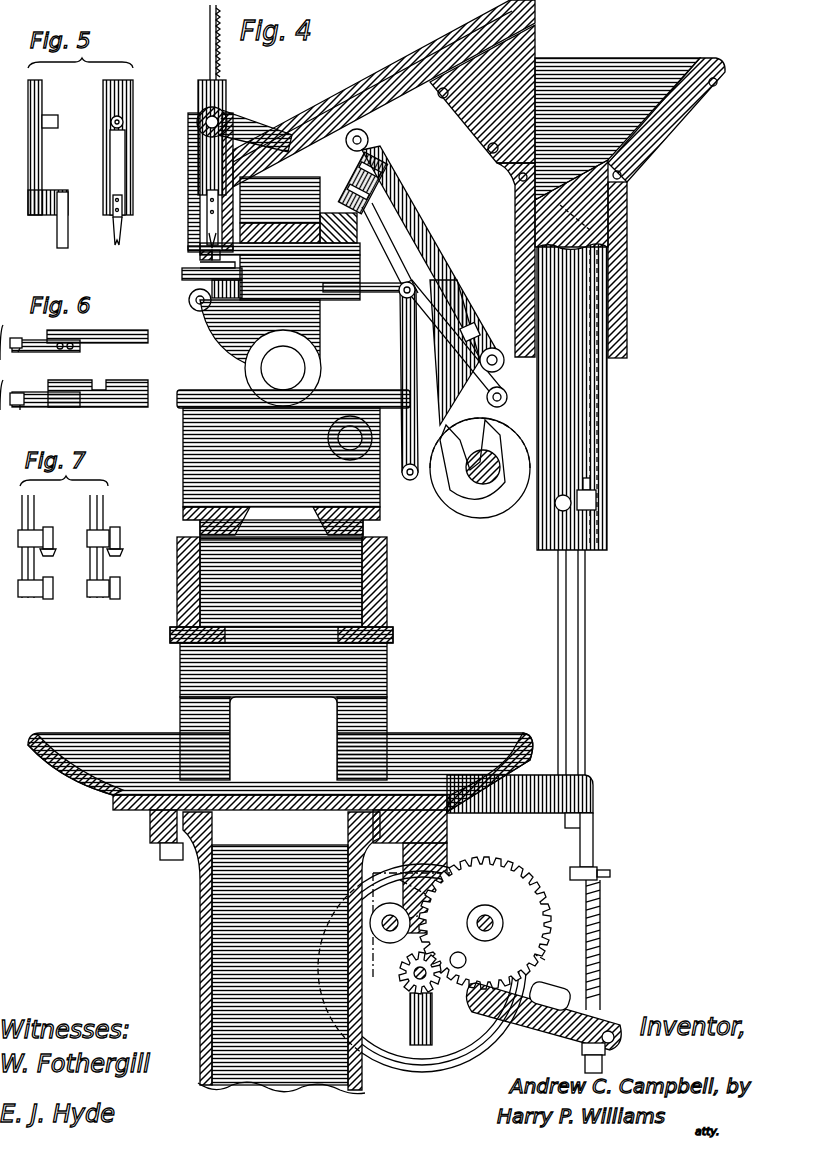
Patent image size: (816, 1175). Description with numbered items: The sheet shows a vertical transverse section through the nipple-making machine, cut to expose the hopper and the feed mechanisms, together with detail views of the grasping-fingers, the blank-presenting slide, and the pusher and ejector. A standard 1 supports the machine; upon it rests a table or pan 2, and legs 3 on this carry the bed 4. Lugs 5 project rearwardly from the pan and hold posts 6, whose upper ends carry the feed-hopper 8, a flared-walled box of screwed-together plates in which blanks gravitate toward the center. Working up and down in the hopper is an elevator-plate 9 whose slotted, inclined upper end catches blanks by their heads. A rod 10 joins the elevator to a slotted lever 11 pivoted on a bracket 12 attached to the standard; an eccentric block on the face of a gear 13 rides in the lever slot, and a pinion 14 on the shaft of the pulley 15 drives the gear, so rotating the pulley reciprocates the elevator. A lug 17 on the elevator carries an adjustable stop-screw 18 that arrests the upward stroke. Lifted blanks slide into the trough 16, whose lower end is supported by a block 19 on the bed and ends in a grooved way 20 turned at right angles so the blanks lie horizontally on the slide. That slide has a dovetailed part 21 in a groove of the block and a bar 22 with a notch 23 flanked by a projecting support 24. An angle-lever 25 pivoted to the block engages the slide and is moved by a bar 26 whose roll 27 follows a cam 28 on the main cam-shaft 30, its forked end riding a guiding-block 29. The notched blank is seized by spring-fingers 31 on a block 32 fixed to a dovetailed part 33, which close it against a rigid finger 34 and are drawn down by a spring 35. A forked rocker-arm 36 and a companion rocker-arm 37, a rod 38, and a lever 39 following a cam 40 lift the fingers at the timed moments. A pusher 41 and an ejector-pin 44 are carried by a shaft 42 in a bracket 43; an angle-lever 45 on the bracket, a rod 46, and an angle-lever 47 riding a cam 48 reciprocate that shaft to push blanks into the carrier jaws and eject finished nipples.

In FIG. 4, the standard 1 is at (198, 928).
In FIG. 4, the table or pan 2 is at (85, 797).
In FIG. 4, the legs 3 is at (330, 716).
In FIG. 4, the bed 4 is at (383, 595).
In FIG. 4, the lugs 5 is at (595, 795).
In FIG. 4, the posts 6 is at (558, 660).
In FIG. 4, the feed-hopper 8 is at (640, 75).
In FIG. 4, the elevator-plate 9 is at (575, 381).
In FIG. 4, the rod 10 is at (587, 733).
In FIG. 4, the lever 11 is at (600, 1010).
In FIG. 4, the bracket 12 is at (392, 1010).
In FIG. 4, the gear 13 is at (548, 880).
In FIG. 4, the pinion 14 is at (445, 988).
In FIG. 4, the pulley 15 is at (515, 1037).
In FIG. 4, the trough 16 is at (451, 60).
In FIG. 4, the lug 17 is at (598, 500).
In FIG. 4, the stop-screw 18 is at (590, 484).
In FIG. 4, the block 19 is at (365, 246).
In FIG. 4, the grooved way 20 is at (205, 182).
In FIG. 4, the dovetailed part 21 is at (337, 256).
In FIG. 6, the dovetailed part 21 is at (128, 343).
In FIG. 4, the bar 22 is at (205, 252).
In FIG. 6, the bar 22 is at (75, 352).
In FIG. 4, the notch 23 is at (213, 257).
In FIG. 6, the notch 23 is at (20, 338).
In FIG. 4, the projecting support 24 is at (208, 263).
In FIG. 6, the projecting support 24 is at (20, 352).
In FIG. 4, the angle-lever 25 is at (382, 185).
In FIG. 4, the bar 26 is at (425, 250).
In FIG. 4, the roll 27 is at (497, 367).
In FIG. 4, the cam 28 is at (505, 517).
In FIG. 4, the guiding-block 29 is at (460, 510).
In FIG. 4, the main cam-shaft 30 is at (442, 480).
In FIG. 4, the spring-fingers 31 is at (207, 212).
In FIG. 5, the spring-fingers 31 is at (110, 228).
In FIG. 5, the block 32 is at (48, 190).
In FIG. 4, the dovetailed part 33 is at (225, 100).
In FIG. 5, the dovetailed part 33 is at (105, 95).
In FIG. 4, the rigid finger 34 is at (209, 230).
In FIG. 5, the rigid finger 34 is at (116, 247).
In FIG. 4, the spring 35 is at (210, 30).
In FIG. 4, the rocker-arm 36 is at (250, 130).
In FIG. 4, the rocker-arm 37 is at (350, 130).
In FIG. 4, the rod 38 is at (452, 300).
In FIG. 4, the lever 39 is at (455, 345).
In FIG. 4, the cam 40 is at (410, 480).
In FIG. 7, the pusher 41 is at (55, 522).
In FIG. 4, the shaft 42 is at (188, 300).
In FIG. 7, the shaft 42 is at (90, 503).
In FIG. 4, the bracket 43 is at (212, 320).
In FIG. 4, the ejector-pin 44 is at (205, 298).
In FIG. 7, the ejector-pin 44 is at (44, 580).
In FIG. 4, the angle-lever 45 is at (195, 275).
In FIG. 4, the rod 46 is at (355, 292).
In FIG. 4, the angle-lever 47 is at (403, 348).
In FIG. 4, the cam 48 is at (504, 403).